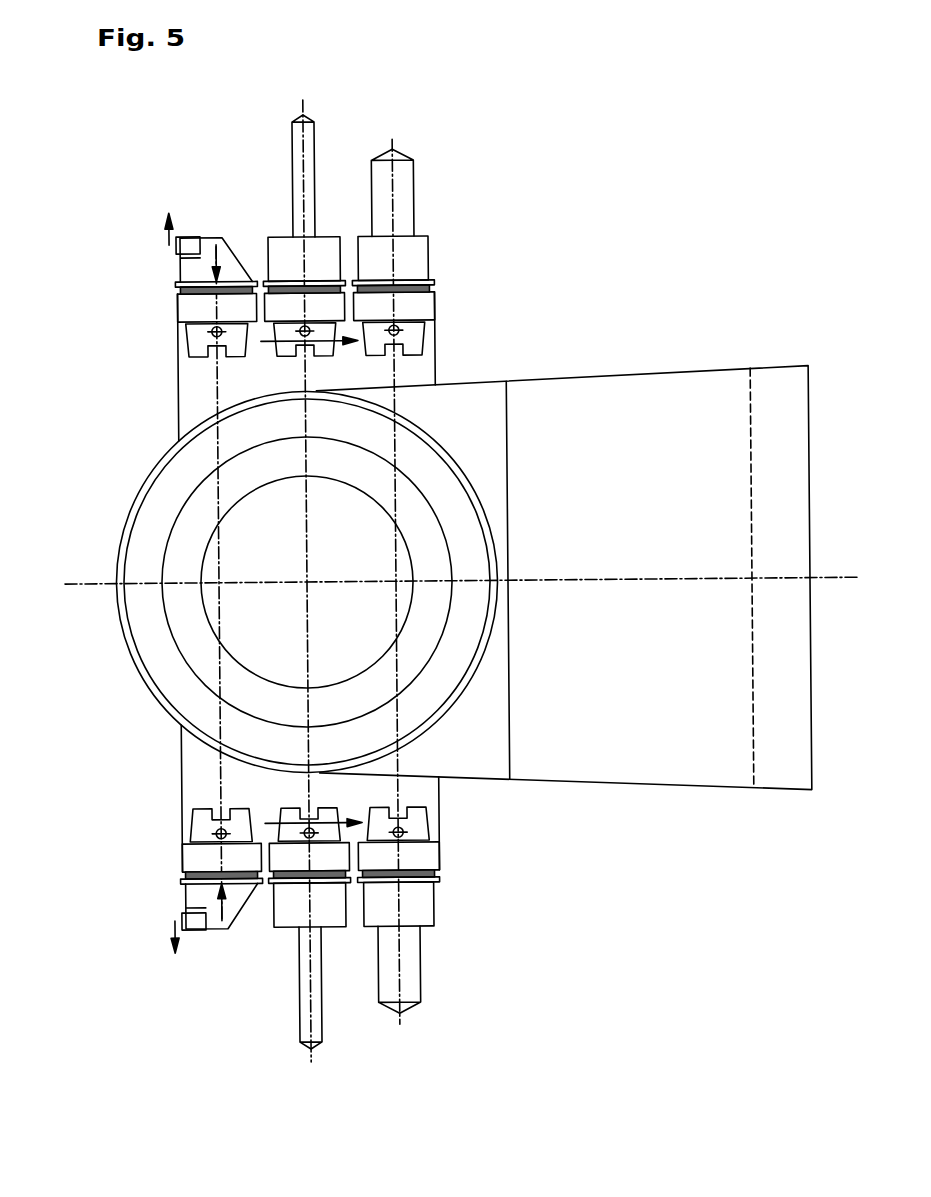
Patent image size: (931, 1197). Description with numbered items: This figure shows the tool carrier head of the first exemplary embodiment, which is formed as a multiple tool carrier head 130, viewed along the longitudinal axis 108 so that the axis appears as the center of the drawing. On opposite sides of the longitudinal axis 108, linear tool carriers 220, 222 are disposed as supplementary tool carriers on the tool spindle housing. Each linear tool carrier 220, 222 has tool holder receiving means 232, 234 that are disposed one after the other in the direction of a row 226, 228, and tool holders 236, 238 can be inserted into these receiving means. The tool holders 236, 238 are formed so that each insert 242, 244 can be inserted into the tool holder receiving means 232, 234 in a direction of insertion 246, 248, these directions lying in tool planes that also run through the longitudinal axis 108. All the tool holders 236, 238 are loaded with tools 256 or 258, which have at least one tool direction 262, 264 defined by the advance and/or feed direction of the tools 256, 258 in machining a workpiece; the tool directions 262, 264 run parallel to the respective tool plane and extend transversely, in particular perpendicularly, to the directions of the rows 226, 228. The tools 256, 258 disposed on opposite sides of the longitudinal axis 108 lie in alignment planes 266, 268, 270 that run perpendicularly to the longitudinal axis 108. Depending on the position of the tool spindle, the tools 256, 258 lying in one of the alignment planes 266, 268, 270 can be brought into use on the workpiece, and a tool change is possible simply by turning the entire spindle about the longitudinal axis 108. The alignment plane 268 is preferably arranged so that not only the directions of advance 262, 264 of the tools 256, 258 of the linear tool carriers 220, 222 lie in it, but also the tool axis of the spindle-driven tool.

The longitudinal axis 108 is at (850, 581).
The multiple tool carrier head 130 is at (502, 368).
The linear tool carrier 220 is at (429, 274).
The linear tool carrier 222 is at (416, 858).
The direction of row 226 is at (326, 341).
The direction of row 228 is at (325, 823).
The tool holder receiving means 232 is at (189, 336).
The tool holder receiving means 234 is at (189, 829).
The tool holder 236 is at (203, 311).
The tool holder 238 is at (203, 857).
The insert 242 is at (231, 342).
The insert 244 is at (228, 826).
The direction of insertion 246 is at (184, 258).
The direction of insertion 248 is at (184, 907).
The tool 256 is at (194, 236).
The tool 258 is at (192, 930).
The tool direction 262 is at (168, 238).
The tool direction 264 is at (166, 931).
The alignment plane 266 is at (219, 641).
The alignment plane 268 is at (306, 518).
The alignment plane 270 is at (386, 430).